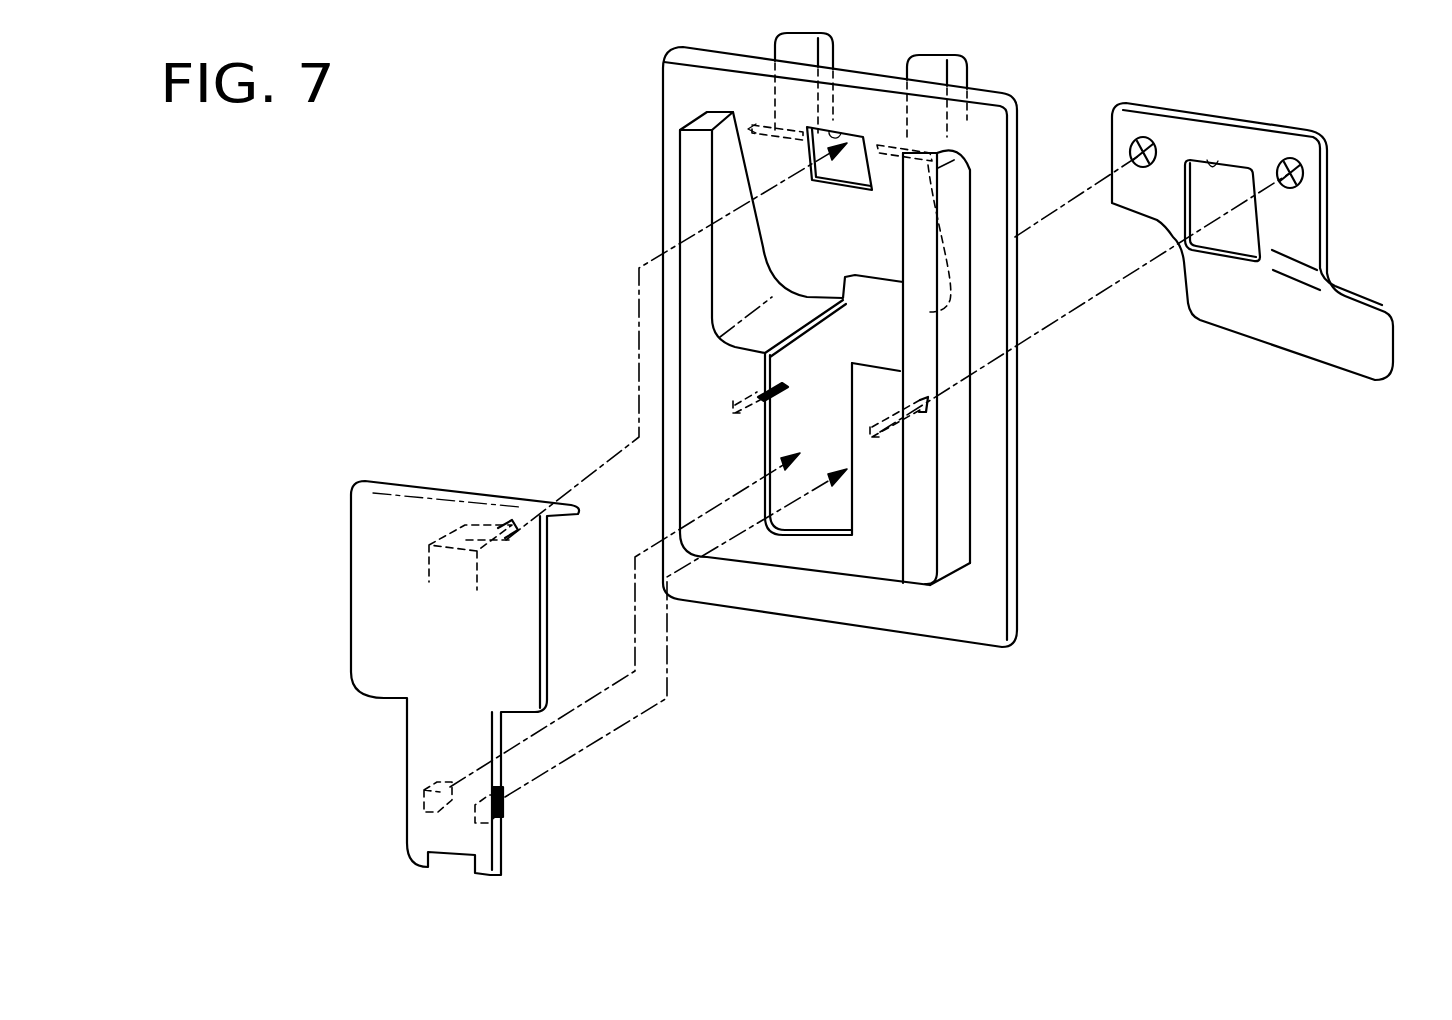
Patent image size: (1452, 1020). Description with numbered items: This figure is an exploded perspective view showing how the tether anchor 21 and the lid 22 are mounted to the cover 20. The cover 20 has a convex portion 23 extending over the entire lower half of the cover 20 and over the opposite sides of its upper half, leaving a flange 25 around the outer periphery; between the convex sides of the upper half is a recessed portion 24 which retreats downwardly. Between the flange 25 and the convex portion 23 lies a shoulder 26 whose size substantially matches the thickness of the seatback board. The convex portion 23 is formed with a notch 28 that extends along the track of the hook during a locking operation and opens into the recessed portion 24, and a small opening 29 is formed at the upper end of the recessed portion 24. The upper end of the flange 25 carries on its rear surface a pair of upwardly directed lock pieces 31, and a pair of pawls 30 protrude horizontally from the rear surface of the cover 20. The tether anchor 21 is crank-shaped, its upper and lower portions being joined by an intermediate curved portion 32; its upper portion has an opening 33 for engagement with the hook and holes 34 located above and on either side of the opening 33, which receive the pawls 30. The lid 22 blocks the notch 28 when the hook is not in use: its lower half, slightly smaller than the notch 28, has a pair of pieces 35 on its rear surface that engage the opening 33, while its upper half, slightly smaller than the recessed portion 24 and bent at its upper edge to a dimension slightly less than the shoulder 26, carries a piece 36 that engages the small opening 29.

The cover 20 is at (824, 341).
The tether anchor 21 is at (1234, 212).
The lid 22 is at (458, 641).
The convex portion 23 is at (710, 343).
The recessed portion 24 is at (787, 215).
The flange 25 is at (995, 450).
The shoulder 26 is at (952, 503).
The notch 28 is at (820, 529).
The small opening 29 is at (838, 133).
The pawls 30 is at (745, 388).
The lock pieces 31 is at (792, 50).
The intermediate curved portion 32 is at (1360, 298).
The opening 33 is at (1210, 163).
The holes 34 is at (1133, 145).
The pieces 35 is at (427, 787).
The piece 36 is at (503, 542).